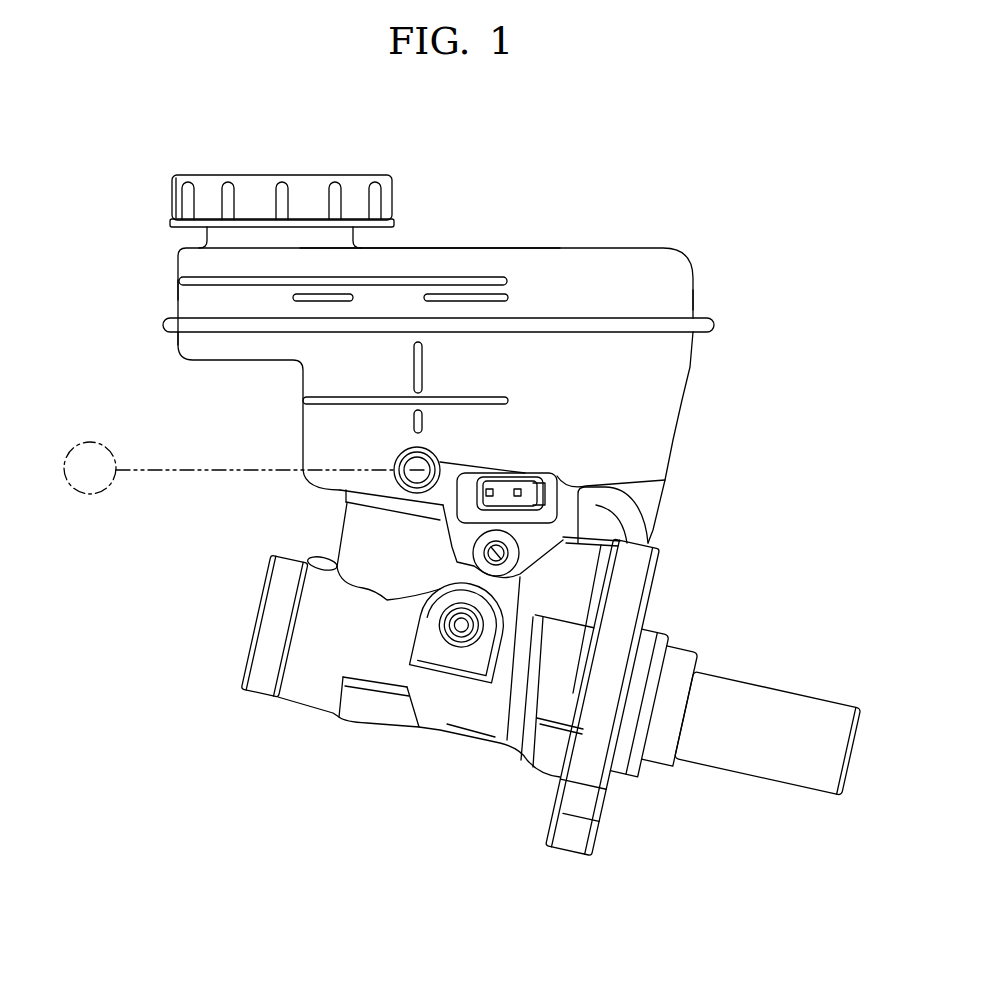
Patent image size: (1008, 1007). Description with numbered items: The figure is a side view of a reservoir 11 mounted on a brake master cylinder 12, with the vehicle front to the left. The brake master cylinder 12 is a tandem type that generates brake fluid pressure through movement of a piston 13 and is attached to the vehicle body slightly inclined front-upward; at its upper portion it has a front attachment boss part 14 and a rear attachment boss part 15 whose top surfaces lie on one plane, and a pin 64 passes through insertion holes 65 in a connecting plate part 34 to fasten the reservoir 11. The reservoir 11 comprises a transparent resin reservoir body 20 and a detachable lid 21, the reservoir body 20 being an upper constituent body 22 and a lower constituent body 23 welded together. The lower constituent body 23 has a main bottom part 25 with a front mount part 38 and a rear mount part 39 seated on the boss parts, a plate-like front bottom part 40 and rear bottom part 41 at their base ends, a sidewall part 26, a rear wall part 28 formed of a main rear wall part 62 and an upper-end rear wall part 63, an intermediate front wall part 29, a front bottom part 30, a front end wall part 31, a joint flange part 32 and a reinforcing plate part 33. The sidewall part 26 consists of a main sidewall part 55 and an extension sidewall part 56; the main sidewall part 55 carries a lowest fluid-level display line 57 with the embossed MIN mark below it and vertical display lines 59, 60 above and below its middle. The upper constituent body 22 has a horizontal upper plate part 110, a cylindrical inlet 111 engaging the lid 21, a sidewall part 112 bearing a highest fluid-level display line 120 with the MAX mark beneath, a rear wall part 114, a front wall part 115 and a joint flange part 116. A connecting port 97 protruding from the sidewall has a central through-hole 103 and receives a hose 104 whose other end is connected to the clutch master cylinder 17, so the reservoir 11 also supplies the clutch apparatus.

The reservoir 11 is at (703, 246).
The brake master cylinder 12 is at (696, 639).
The piston 13 is at (773, 772).
The front attachment boss part 14 is at (349, 539).
The rear attachment boss part 15 is at (584, 588).
The clutch master cylinder 17 is at (86, 494).
The reservoir body 20 is at (182, 257).
The lid 21 is at (166, 200).
The upper constituent body 22 is at (443, 250).
The lower constituent body 23 is at (441, 364).
The main bottom part 25 is at (396, 514).
The sidewall part 26 is at (623, 415).
The rear wall part 28 is at (667, 467).
The intermediate front wall part 29 is at (303, 422).
The front bottom part 30 is at (258, 368).
The front end wall part 31 is at (178, 343).
The joint flange part 32 is at (698, 336).
The reinforcing plate part 33 is at (223, 369).
The connecting plate part 34 is at (534, 760).
The front mount part 38 is at (377, 508).
The rear mount part 39 is at (603, 567).
The front bottom part 40 is at (379, 492).
The rear bottom part 41 is at (612, 545).
The main sidewall part 55 is at (643, 389).
The extension sidewall part 56 is at (220, 342).
The lowest fluid-level display line 57 is at (496, 392).
The display line 59 is at (420, 370).
The display line 60 is at (421, 422).
The main rear wall part 62 is at (666, 493).
The upper-end rear wall part 63 is at (694, 341).
The pin 64 is at (506, 562).
The insertion hole 65 is at (496, 557).
The connecting port 97 is at (400, 465).
The through-hole 103 is at (410, 481).
The hose 104 is at (148, 473).
The upper plate part 110 is at (617, 247).
The inlet 111 is at (306, 232).
The sidewall part 112 is at (640, 283).
The rear wall part 114 is at (694, 298).
The front wall part 115 is at (178, 291).
The joint flange part 116 is at (168, 318).
The highest fluid-level display line 120 is at (412, 281).